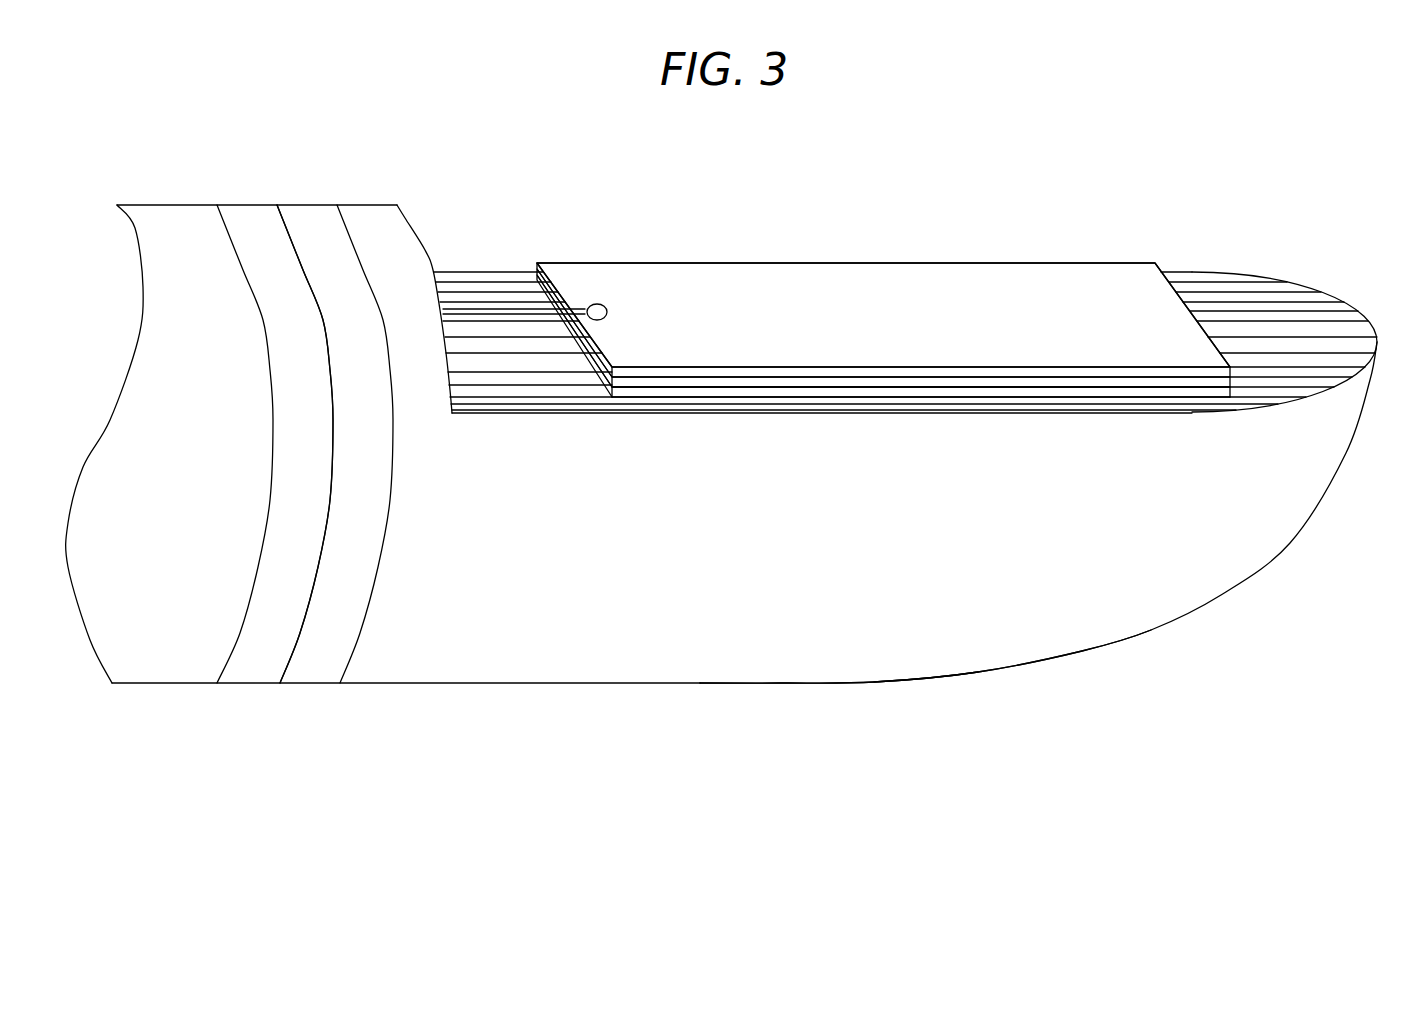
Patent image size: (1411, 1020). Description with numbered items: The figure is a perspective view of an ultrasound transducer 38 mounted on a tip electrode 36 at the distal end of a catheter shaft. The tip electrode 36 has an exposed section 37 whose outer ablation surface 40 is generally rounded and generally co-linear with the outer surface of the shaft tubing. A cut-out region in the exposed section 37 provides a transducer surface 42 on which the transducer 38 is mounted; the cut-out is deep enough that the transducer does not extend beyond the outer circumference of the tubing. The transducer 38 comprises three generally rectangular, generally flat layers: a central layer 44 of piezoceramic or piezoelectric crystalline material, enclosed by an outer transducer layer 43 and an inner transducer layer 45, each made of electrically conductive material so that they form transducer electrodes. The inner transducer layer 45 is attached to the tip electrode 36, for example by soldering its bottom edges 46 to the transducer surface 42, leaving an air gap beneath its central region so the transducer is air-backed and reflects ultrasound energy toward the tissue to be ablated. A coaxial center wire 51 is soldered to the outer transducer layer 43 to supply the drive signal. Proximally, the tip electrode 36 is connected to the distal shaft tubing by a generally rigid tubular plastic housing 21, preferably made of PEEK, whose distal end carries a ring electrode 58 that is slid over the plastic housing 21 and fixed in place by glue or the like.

The plastic housing 21 is at (328, 233).
The tip electrode 36 is at (740, 657).
The exposed section 37 is at (793, 622).
The ultrasound transducer 38 is at (752, 262).
The outer ablation surface 40 is at (977, 622).
The transducer surface 42 is at (1283, 322).
The outer transducer layer 43 is at (848, 287).
The central layer 44 is at (1018, 378).
The inner transducer layer 45 is at (952, 393).
The bottom edges 46 is at (743, 397).
The coaxial center wire 51 is at (590, 306).
The ring electrode 58 is at (258, 220).